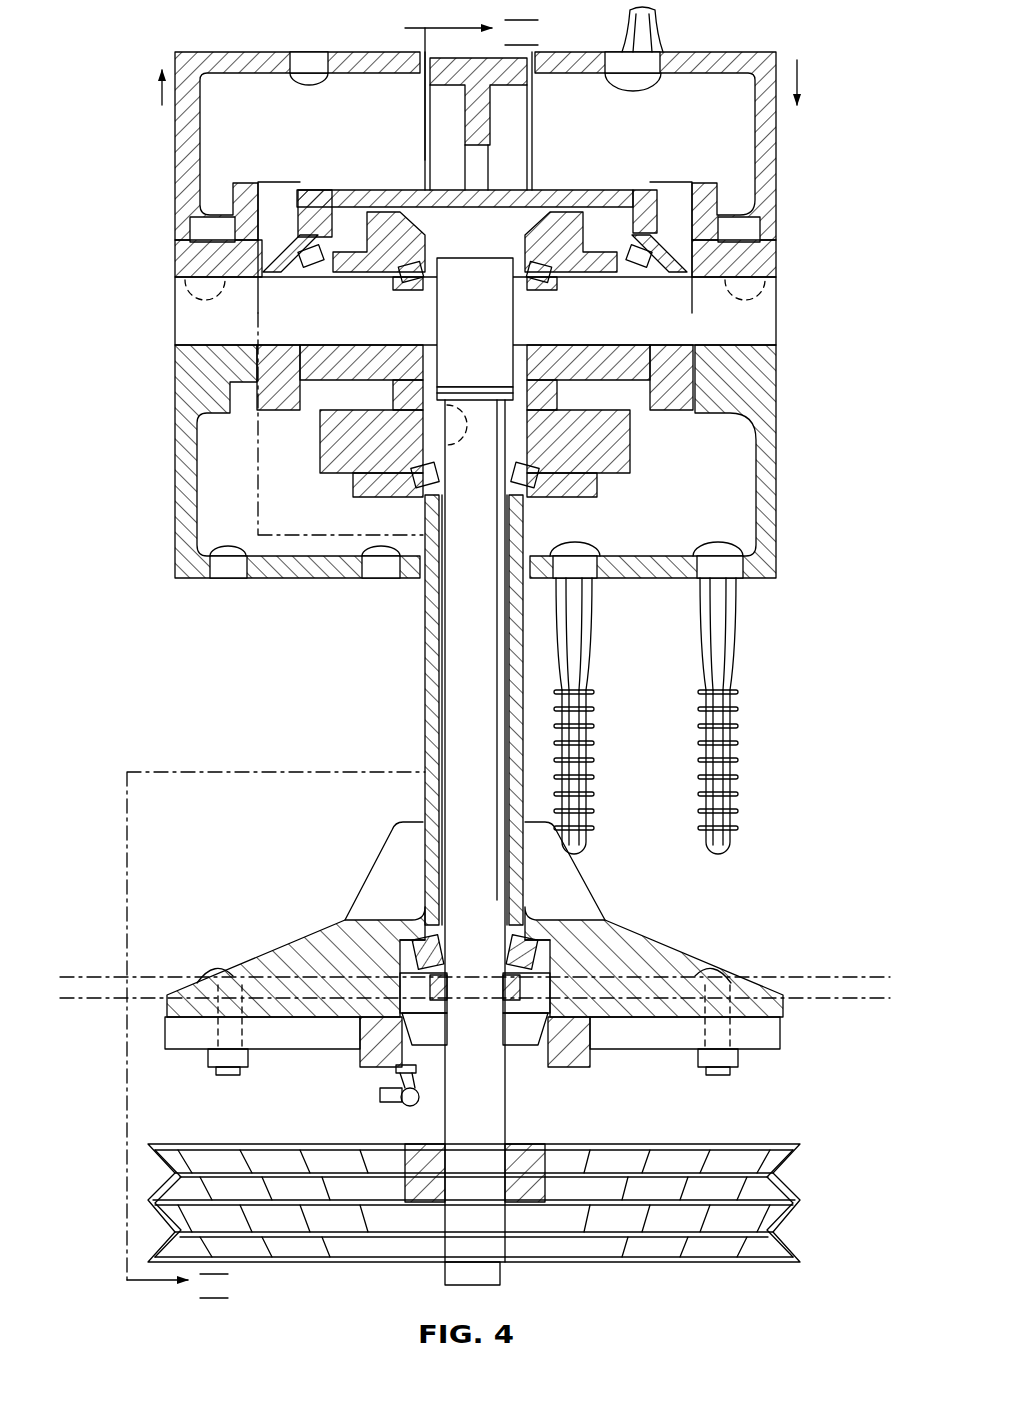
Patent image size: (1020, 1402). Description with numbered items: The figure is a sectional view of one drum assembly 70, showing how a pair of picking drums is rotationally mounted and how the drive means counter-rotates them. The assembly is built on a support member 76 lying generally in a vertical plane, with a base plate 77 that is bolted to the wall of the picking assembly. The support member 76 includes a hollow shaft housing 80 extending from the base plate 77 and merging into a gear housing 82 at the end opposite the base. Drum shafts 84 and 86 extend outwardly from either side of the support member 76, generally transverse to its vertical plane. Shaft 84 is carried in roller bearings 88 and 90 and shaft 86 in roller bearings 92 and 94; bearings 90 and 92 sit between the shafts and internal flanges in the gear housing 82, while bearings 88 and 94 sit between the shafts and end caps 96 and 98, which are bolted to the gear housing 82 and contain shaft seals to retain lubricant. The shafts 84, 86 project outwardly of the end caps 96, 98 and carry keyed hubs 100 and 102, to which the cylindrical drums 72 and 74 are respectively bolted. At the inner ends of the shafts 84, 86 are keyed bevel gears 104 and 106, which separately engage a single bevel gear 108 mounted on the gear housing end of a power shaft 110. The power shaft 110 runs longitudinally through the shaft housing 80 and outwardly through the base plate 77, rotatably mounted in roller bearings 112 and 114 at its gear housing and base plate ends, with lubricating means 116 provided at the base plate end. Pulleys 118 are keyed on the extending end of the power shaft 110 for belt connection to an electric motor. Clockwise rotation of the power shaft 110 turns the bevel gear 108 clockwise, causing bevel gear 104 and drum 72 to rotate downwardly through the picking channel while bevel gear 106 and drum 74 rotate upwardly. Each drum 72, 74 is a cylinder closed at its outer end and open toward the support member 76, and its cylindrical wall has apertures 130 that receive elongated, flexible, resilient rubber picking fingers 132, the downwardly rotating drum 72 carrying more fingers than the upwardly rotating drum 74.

The drum assembly 70 is at (482, 662).
The cylindrical drum 72 is at (183, 170).
The cylindrical drum 74 is at (779, 182).
The support member 76 is at (283, 940).
The base plate 77 is at (302, 1014).
The hollow shaft housing 80 is at (423, 690).
The gear housing 82 is at (600, 192).
The drum shaft 84 is at (310, 322).
The drum shaft 86 is at (689, 322).
The roller bearing 88 is at (297, 243).
The roller bearing 90 is at (395, 288).
The roller bearing 92 is at (543, 288).
The roller bearing 94 is at (657, 243).
The end cap 96 is at (312, 192).
The end cap 98 is at (652, 193).
The hub 100 is at (176, 260).
The hub 102 is at (778, 262).
The bevel gear 104 is at (382, 214).
The bevel gear 106 is at (568, 214).
The bevel gear 108 is at (535, 450).
The power shaft 110 is at (443, 637).
The roller bearing 112 is at (413, 490).
The roller bearing 114 is at (537, 942).
The lubricating means 116 is at (380, 1078).
The pulleys 118 is at (722, 1147).
The apertures 130 is at (289, 56).
The picking fingers 132 is at (664, 38).